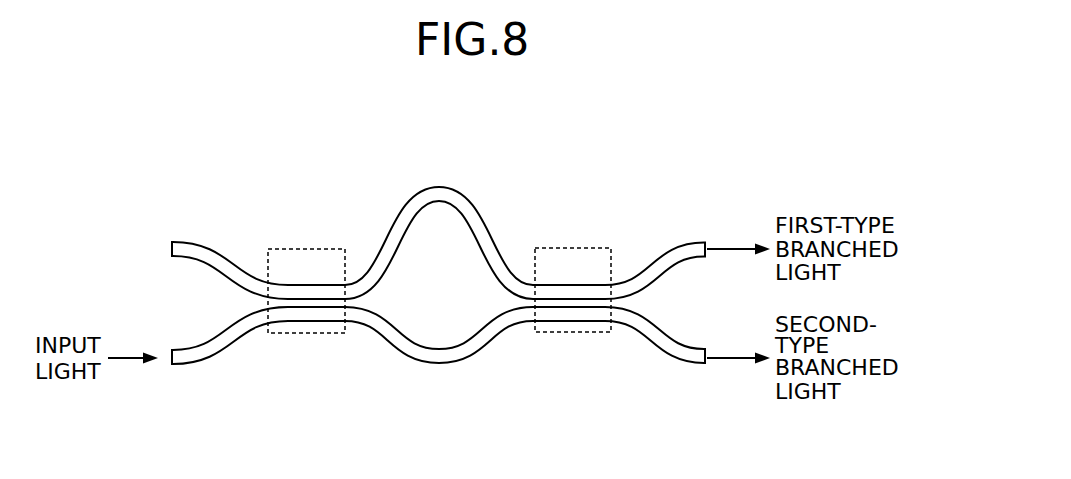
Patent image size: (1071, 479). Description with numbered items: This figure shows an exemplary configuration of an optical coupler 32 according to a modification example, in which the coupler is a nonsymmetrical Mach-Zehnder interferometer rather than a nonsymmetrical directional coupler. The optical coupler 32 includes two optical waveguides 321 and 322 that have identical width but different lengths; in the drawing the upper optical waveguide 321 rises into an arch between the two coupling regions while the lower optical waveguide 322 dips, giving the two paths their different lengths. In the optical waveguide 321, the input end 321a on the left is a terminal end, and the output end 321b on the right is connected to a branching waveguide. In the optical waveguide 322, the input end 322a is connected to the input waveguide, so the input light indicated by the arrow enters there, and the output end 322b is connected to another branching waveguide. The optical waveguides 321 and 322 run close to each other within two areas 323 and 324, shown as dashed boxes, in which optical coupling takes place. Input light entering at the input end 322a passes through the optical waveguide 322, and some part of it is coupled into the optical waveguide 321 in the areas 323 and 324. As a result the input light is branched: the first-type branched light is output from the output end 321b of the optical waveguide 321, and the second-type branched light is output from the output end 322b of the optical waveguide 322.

The optical coupler 32 is at (440, 279).
The optical waveguide 321 is at (198, 242).
The input end 321a is at (172, 240).
The output end 321b is at (707, 241).
The optical waveguide 322 is at (200, 367).
The input end 322a is at (170, 366).
The output end 322b is at (710, 365).
The area 323 is at (302, 334).
The area 324 is at (572, 334).